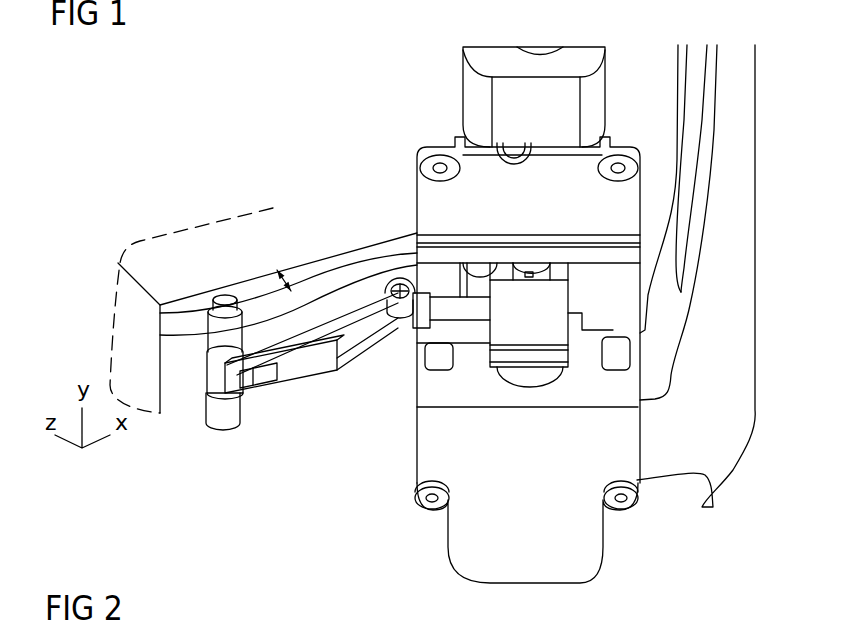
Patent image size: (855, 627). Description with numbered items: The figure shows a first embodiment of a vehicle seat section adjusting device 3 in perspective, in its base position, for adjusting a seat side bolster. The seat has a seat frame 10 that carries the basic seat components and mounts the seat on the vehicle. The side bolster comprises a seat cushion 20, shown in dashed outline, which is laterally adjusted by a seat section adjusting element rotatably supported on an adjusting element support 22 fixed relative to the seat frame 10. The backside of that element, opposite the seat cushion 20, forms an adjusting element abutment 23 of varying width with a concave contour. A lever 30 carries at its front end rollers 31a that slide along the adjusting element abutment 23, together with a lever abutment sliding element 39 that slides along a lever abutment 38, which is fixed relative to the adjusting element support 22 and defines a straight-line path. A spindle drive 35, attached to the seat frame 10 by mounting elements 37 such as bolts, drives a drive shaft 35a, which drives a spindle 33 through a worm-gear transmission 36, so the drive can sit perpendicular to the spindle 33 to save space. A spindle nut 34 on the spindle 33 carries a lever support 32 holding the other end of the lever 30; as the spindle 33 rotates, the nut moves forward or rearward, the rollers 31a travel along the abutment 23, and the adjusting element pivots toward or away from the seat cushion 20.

The vehicle seat section adjusting device 3 is at (227, 170).
The seat frame 10 is at (713, 507).
The seat cushion 20 is at (120, 245).
The adjusting element support 22 is at (477, 347).
The adjusting element abutment 23 is at (246, 295).
The lever 30 is at (360, 348).
The rollers 31a is at (213, 420).
The lever support 32 is at (393, 303).
The spindle 33 is at (450, 307).
The spindle nut 34 is at (420, 277).
The spindle drive 35 is at (512, 98).
The drive shaft 35a is at (532, 277).
The worm-gear transmission 36 is at (518, 333).
The adjusting mechanism mounting mechanism elements 37 is at (618, 167).
The lever abutment 38 is at (253, 395).
The lever abutment sliding element 39 is at (213, 373).